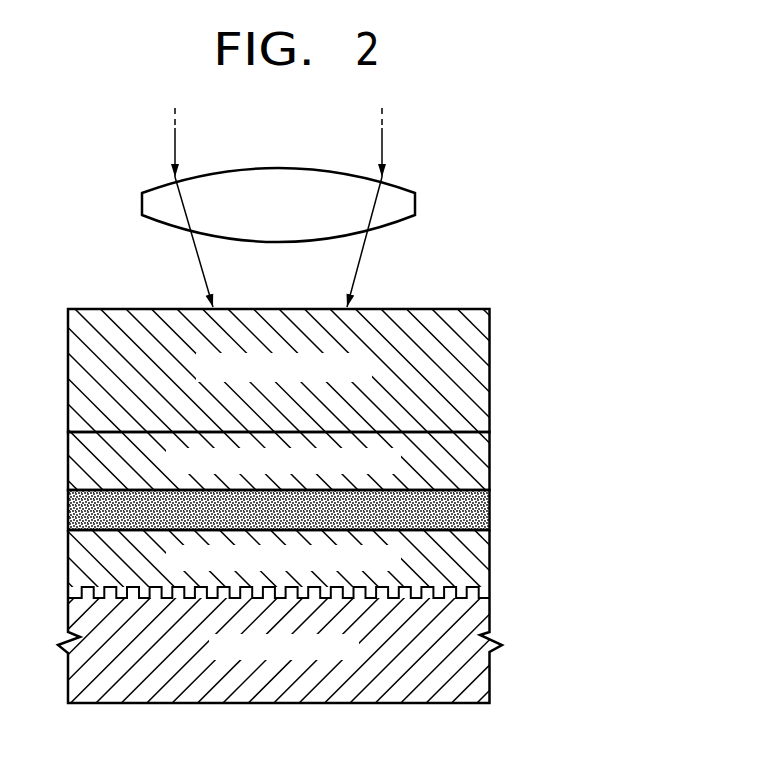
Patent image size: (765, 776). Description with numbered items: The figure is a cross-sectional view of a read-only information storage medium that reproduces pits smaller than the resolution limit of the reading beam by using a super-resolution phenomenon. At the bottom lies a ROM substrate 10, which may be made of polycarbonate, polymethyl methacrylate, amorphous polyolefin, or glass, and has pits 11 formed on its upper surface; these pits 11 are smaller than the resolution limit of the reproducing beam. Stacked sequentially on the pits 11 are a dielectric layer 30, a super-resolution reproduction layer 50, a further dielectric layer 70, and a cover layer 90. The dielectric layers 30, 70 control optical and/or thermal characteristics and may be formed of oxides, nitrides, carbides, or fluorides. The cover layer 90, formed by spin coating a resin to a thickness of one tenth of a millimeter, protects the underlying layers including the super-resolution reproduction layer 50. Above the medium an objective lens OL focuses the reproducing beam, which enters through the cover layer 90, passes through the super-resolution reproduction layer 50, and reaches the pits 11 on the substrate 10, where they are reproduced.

The objective lens OL is at (415, 205).
The cover layer 90 is at (480, 372).
The dielectric layer 70 is at (478, 462).
The super-resolution reproduction layer 50 is at (490, 510).
The dielectric layer 30 is at (478, 556).
The pits 11 is at (435, 577).
The ROM substrate 10 is at (480, 613).